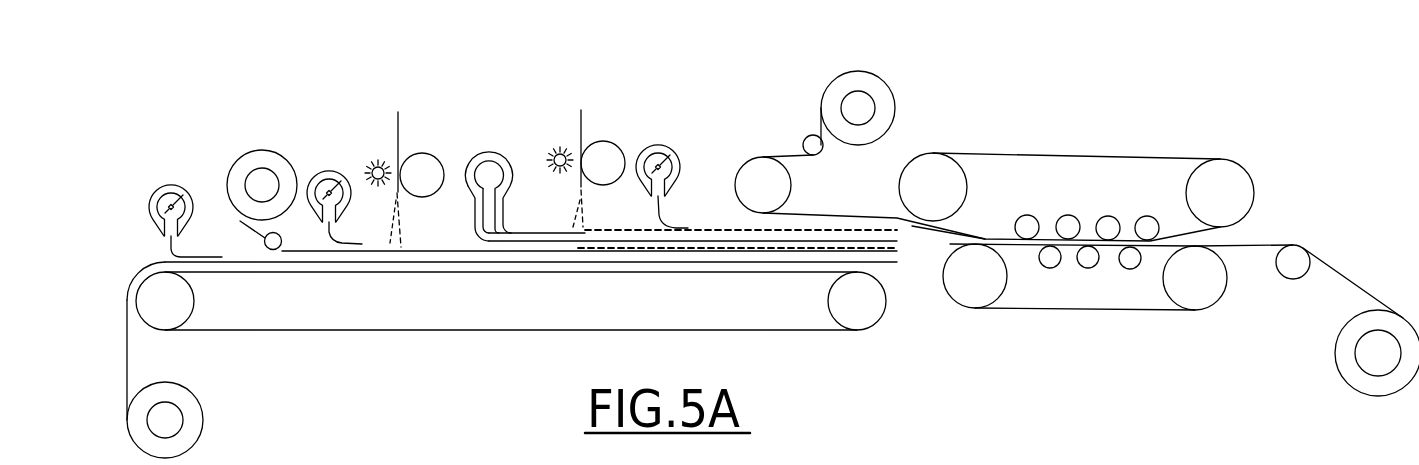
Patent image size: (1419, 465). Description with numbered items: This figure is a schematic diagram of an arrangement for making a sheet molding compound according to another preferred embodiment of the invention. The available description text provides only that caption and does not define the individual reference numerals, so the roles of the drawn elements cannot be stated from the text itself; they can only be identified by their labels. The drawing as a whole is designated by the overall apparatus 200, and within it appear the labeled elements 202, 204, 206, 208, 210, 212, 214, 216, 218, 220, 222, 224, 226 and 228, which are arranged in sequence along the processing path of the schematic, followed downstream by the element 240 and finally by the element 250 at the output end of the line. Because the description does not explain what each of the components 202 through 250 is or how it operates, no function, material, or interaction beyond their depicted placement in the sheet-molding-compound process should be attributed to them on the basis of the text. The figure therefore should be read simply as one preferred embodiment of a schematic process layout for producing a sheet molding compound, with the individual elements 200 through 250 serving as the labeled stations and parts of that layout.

The laminating apparatus 200 is at (887, 50).
The web 202 is at (822, 123).
The supply roll 204 is at (175, 422).
The substrate web 206 is at (172, 258).
The extrusion nozzle 208 is at (150, 200).
The guide roller line 210 is at (243, 222).
The roller 212 is at (257, 180).
The extruded film 214 is at (330, 230).
The extrusion nozzle 216 is at (315, 171).
The adhesive layer 218 is at (405, 225).
The roller 220 is at (400, 137).
The spray nozzle 222 is at (377, 161).
The film 224 is at (500, 218).
The slot die 226 is at (493, 150).
The adhesive layer 228 is at (583, 218).
The laminator 240 is at (1120, 157).
The take-up roll 250 is at (1335, 363).